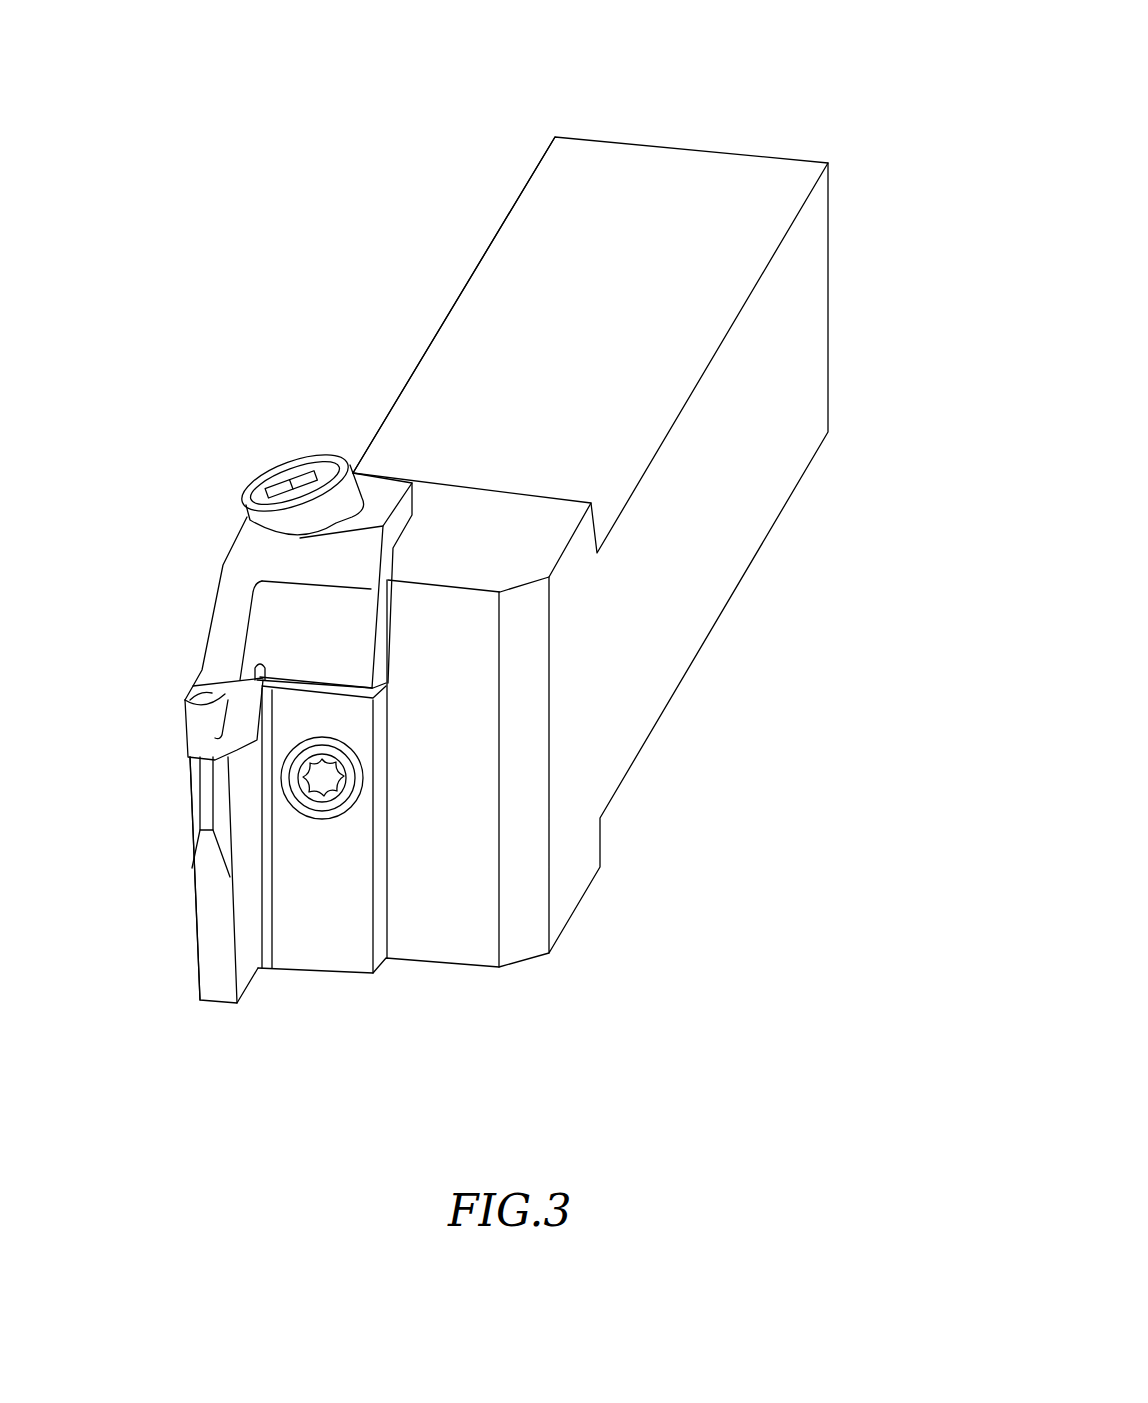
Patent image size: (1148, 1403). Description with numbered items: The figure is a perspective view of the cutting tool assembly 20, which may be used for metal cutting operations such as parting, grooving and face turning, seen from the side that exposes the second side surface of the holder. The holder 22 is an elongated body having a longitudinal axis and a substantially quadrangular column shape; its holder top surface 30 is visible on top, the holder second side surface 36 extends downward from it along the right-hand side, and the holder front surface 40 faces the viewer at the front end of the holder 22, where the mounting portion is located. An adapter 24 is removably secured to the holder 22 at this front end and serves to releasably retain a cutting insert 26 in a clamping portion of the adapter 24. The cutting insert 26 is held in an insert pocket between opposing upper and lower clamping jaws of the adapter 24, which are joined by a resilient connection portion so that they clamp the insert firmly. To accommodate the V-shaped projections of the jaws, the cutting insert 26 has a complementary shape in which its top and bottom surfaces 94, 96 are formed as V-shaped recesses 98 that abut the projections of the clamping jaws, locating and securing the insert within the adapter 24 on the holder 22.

The cutting tool assembly 20 is at (338, 78).
The holder 22 is at (735, 556).
The adapter 24 is at (211, 985).
The cutting insert 26 is at (192, 722).
The holder top surface 30 is at (513, 297).
The holder second side surface 36 is at (775, 443).
The holder front surface 40 is at (456, 913).
The top surface of cutting insert 94 is at (180, 688).
The bottom surface of cutting insert 96 is at (189, 770).
The V-shaped recesses 98 is at (192, 676).